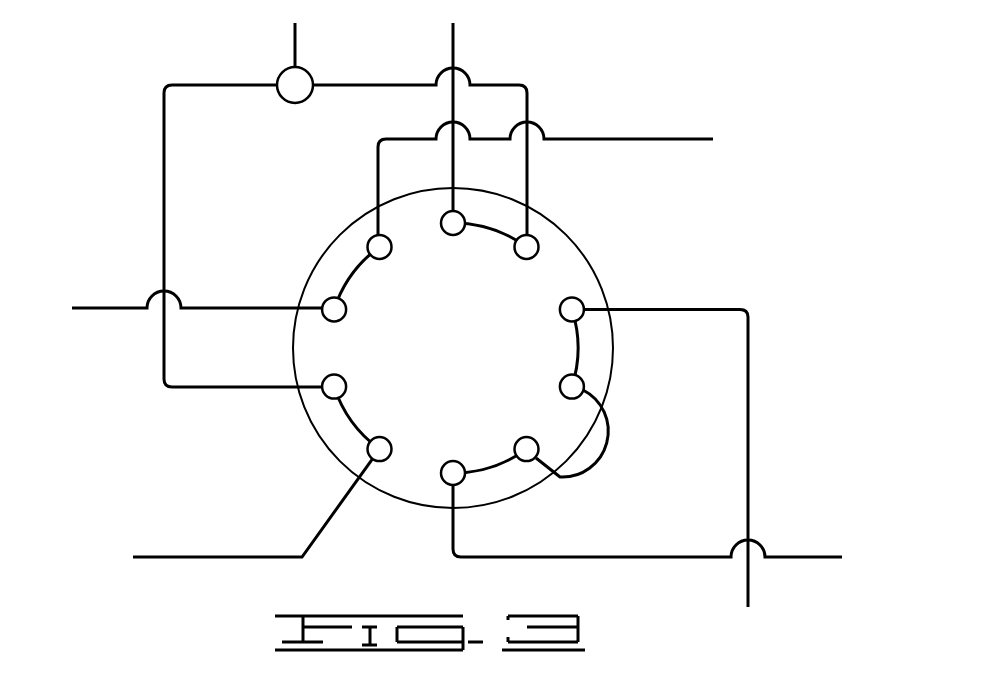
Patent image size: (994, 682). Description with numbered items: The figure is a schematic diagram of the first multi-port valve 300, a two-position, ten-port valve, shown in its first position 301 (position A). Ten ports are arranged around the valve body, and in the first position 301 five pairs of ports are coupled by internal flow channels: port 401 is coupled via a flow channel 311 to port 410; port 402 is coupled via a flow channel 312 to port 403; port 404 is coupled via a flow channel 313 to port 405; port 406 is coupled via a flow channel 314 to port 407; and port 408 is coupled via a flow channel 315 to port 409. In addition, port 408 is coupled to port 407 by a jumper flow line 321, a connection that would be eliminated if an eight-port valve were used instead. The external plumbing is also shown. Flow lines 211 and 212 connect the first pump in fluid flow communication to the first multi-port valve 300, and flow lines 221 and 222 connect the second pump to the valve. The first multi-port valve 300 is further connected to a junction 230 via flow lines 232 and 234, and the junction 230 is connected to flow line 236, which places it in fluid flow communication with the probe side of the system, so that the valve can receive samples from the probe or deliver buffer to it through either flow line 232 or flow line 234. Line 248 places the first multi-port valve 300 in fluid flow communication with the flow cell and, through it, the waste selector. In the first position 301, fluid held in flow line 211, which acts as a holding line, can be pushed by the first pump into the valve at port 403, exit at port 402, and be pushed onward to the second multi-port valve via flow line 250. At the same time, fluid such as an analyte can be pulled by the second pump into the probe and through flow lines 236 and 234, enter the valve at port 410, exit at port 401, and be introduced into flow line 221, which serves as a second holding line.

The first multi-port valve 300 is at (335, 460).
The first position 301 is at (807, 78).
The flow channel 311 is at (489, 229).
The flow channel 312 is at (350, 273).
The flow channel 313 is at (349, 422).
The flow channel 314 is at (533, 466).
The flow channel 315 is at (579, 348).
The jumper flow line 321 is at (612, 463).
The port 401 is at (441, 224).
The port 402 is at (371, 239).
The port 403 is at (322, 302).
The port 404 is at (324, 380).
The port 405 is at (383, 462).
The port 406 is at (458, 486).
The port 407 is at (548, 473).
The port 408 is at (584, 381).
The port 409 is at (582, 300).
The port 410 is at (538, 242).
The flow line 211 is at (100, 306).
The flow line 212 is at (173, 556).
The flow line 221 is at (453, 47).
The flow line 222 is at (748, 378).
The junction 230 is at (286, 99).
The flow line 232 is at (164, 157).
The flow line 234 is at (527, 95).
The flow line 236 is at (295, 47).
The line 248 is at (793, 557).
The flow line 250 is at (650, 139).